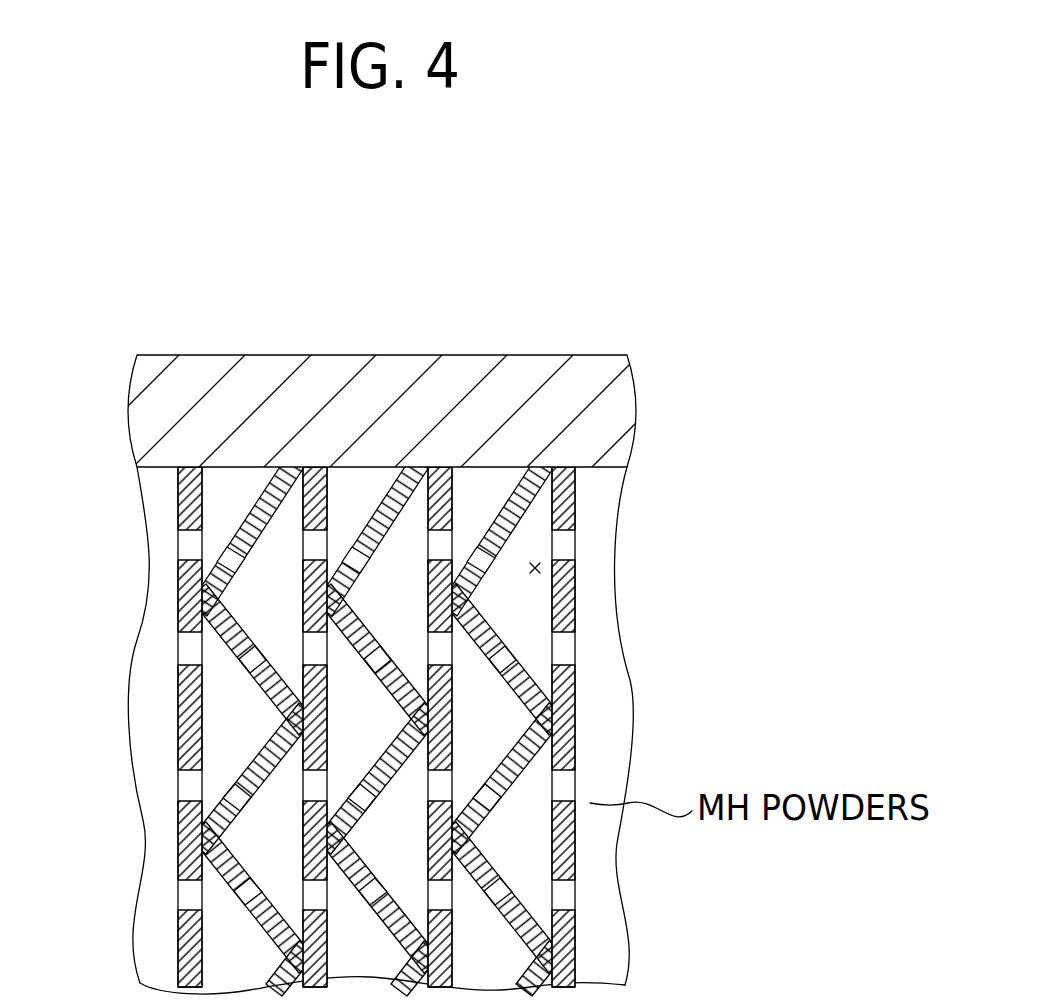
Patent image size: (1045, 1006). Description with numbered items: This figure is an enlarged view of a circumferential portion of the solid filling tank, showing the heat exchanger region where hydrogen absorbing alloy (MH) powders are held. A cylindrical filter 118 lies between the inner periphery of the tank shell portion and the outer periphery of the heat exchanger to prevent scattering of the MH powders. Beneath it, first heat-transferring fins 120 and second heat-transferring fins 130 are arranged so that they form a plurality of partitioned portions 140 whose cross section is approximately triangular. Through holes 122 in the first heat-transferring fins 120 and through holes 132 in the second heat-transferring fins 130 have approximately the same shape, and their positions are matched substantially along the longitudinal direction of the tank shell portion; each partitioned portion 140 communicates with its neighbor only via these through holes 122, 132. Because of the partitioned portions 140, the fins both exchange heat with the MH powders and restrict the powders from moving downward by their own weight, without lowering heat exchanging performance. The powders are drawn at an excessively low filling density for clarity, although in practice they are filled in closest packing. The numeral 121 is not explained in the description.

The cylindrical filter 118 is at (593, 355).
The first heat-transferring fin 120 is at (203, 492).
The fin joint 121 is at (203, 597).
The through hole 122 is at (243, 548).
The second heat-transferring fin 130 is at (642, 727).
The through hole 132 is at (574, 555).
The partitioned portion 140 is at (538, 576).